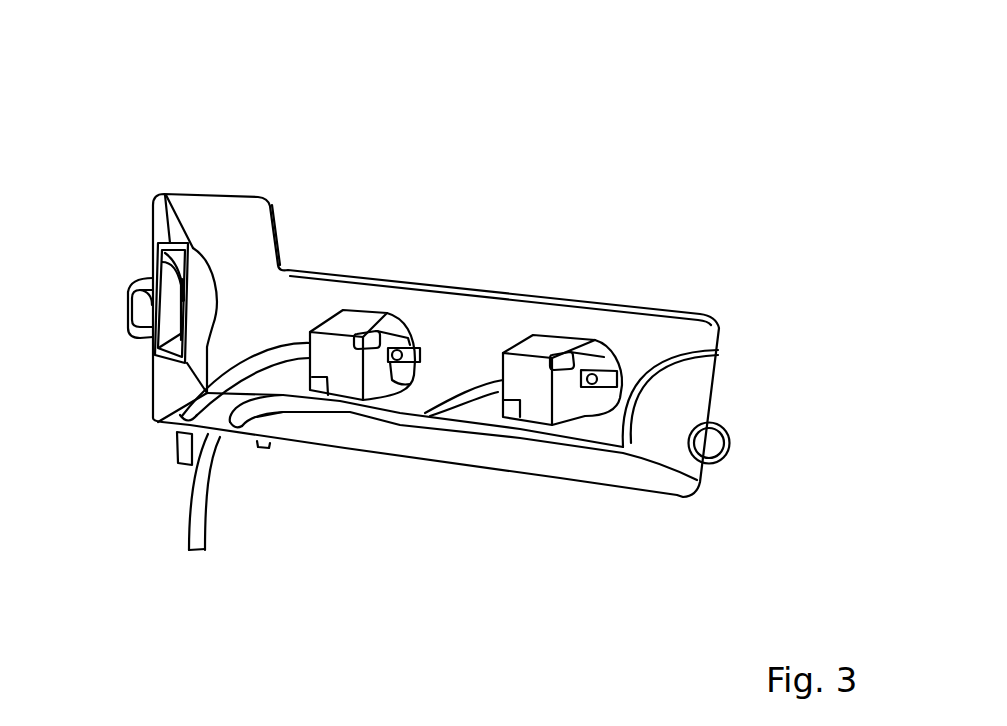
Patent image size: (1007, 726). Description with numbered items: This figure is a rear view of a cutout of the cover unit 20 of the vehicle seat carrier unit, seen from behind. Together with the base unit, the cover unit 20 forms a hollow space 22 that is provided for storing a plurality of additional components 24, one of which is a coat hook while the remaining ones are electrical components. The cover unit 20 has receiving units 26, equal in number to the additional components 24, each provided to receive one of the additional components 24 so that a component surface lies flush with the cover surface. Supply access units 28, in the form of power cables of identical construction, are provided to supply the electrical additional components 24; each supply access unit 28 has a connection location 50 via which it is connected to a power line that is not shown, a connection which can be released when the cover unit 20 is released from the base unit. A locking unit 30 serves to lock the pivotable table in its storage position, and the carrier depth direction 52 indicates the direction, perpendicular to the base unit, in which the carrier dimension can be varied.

The cover unit 20 is at (700, 86).
The hollow space 22 is at (449, 342).
The additional components 24 is at (137, 316).
The receiving unit 26 is at (382, 303).
The supply access unit 28 is at (158, 475).
The locking unit 30 is at (728, 402).
The connection location 50 is at (158, 451).
The carrier depth direction 52 is at (515, 83).